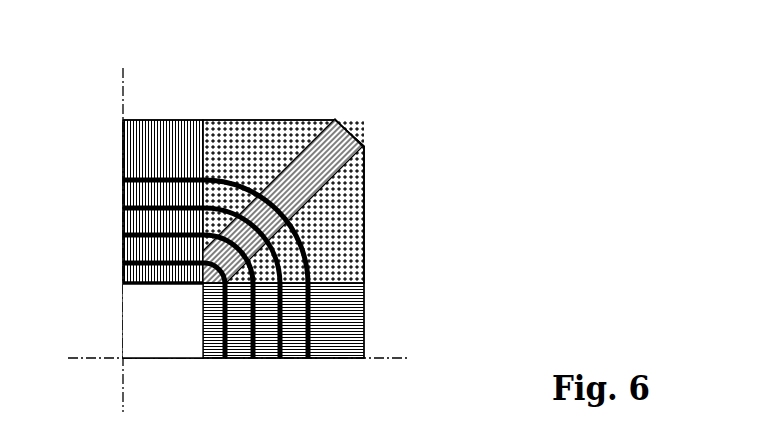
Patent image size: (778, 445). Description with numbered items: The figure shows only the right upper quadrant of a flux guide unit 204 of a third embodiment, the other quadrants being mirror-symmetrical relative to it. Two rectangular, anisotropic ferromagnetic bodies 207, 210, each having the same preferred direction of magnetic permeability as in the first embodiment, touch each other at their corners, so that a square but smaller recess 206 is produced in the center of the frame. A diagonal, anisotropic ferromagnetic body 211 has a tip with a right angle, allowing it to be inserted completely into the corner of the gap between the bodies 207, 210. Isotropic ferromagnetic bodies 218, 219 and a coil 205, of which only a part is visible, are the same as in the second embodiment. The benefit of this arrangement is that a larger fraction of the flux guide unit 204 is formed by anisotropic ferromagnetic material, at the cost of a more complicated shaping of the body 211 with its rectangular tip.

The flux guide unit 204 is at (498, 110).
The coil 205 is at (213, 120).
The recess 206 is at (178, 348).
The rectangular anisotropic ferromagnetic body 207 is at (149, 120).
The rectangular anisotropic ferromagnetic body 210 is at (365, 322).
The diagonal anisotropic ferromagnetic body 211 is at (364, 146).
The isotropic ferromagnetic body 218 is at (365, 258).
The isotropic ferromagnetic body 219 is at (277, 120).